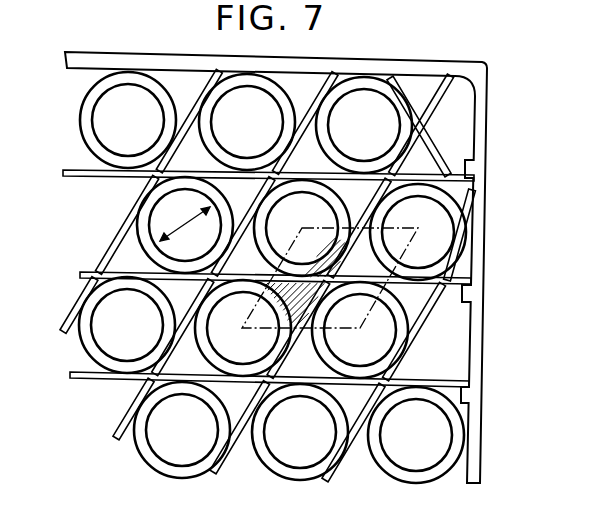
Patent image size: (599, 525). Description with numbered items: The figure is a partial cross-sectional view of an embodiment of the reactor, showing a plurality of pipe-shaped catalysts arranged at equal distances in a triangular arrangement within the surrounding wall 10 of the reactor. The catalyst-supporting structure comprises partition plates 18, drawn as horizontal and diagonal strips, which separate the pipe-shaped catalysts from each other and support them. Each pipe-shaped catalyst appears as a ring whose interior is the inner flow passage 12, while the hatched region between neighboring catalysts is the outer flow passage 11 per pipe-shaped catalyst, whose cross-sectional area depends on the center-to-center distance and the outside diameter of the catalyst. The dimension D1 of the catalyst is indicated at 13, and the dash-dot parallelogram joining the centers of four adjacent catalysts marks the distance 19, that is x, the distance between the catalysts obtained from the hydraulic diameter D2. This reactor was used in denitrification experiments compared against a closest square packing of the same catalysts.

The surrounding wall of the reactor 10 is at (484, 128).
The outer flow passage 11 is at (443, 252).
The inner flow passage 12 is at (423, 216).
The D1 13 is at (182, 226).
The partition plate 18 is at (428, 322).
The distance between the catalysts 19 is at (343, 332).